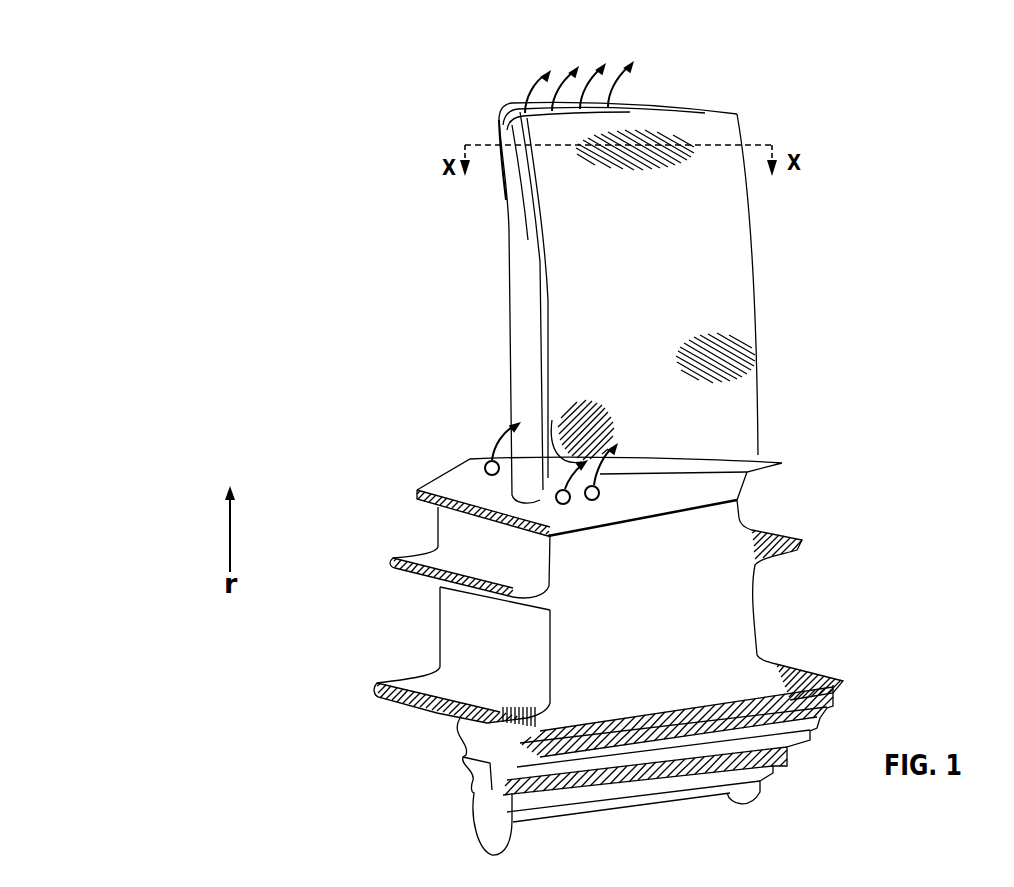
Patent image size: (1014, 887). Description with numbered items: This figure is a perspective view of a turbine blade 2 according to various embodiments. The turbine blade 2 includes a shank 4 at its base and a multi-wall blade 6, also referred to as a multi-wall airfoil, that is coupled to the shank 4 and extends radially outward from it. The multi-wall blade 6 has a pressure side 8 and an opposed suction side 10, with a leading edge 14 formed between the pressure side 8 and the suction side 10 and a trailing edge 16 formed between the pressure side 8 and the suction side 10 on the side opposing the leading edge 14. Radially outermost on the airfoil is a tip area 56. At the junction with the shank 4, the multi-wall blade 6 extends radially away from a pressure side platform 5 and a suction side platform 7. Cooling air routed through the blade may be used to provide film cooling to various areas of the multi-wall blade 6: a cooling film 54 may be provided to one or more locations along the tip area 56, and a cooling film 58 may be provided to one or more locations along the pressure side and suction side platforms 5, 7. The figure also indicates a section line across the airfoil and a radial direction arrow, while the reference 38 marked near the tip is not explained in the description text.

The turbine blade 2 is at (288, 135).
The shank 4 is at (650, 612).
The pressure side platform 5 is at (680, 470).
The multi-wall blade 6 is at (635, 253).
The suction side platform 7 is at (466, 474).
The pressure side 8 is at (742, 320).
The suction side 10 is at (492, 262).
The leading edge 14 is at (520, 332).
The trailing edge 16 is at (758, 386).
The tip 38 is at (710, 106).
The cooling film 54 is at (611, 88).
The tip area 56 is at (474, 86).
The cooling film 58 is at (500, 448).